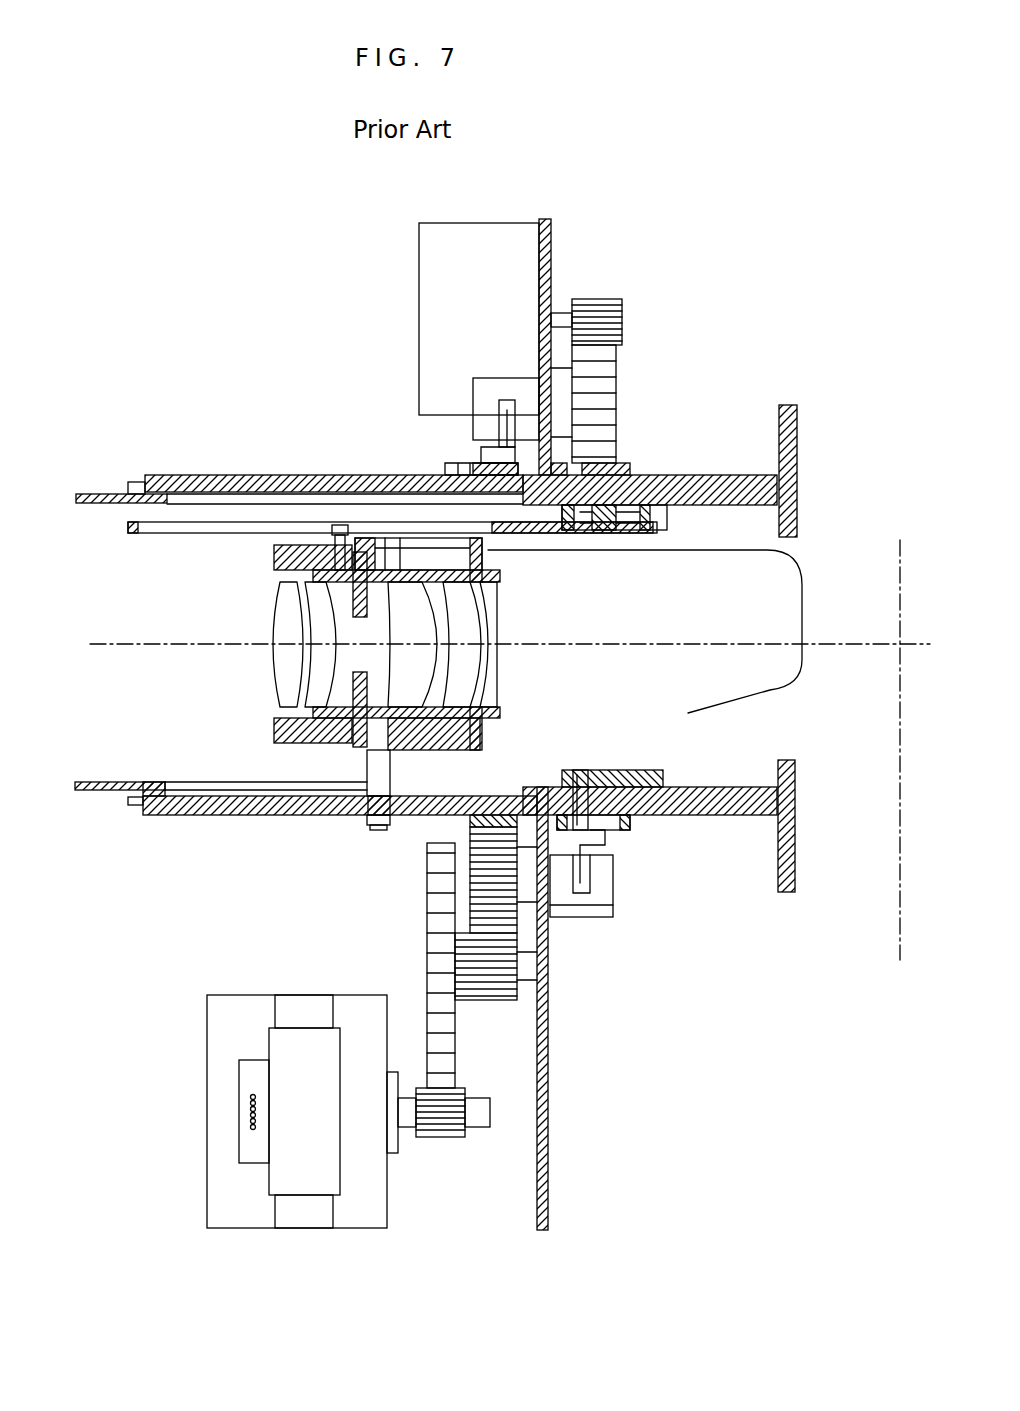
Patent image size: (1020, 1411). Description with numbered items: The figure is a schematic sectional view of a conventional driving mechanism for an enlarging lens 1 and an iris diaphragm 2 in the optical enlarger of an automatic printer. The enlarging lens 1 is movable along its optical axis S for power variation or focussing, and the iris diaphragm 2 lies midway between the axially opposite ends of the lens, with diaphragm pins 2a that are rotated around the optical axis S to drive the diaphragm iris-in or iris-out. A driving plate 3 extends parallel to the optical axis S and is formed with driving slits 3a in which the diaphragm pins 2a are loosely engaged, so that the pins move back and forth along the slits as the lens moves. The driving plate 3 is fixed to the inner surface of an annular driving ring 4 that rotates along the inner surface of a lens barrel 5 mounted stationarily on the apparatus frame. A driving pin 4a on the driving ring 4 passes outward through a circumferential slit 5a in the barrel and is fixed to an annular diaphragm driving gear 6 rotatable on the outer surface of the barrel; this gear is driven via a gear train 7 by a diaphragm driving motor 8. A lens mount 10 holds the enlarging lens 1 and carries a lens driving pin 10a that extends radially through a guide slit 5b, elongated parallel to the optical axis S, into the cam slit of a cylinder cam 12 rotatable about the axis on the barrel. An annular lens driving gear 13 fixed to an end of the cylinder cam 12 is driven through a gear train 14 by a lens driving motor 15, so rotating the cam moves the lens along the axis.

The enlarging lens 1 is at (245, 665).
The iris diaphragm 2 is at (333, 727).
The diaphragm pins 2a is at (333, 537).
The driving plate 3 is at (127, 523).
The driving slits 3a is at (173, 528).
The driving ring 4 is at (667, 517).
The driving pin 4a is at (560, 780).
The lens barrel 5 is at (702, 803).
The slit 5a is at (647, 823).
The guide slit 5b is at (227, 791).
The diaphragm driving gear 6 is at (607, 824).
The gear train 7 is at (617, 380).
The diaphragm driving motor 8 is at (440, 293).
The lens mount 10 is at (450, 750).
The lens driving pin 10a is at (377, 768).
The cylinder cam 12 is at (168, 815).
The lens driving gear 13 is at (520, 800).
The gear train 14 is at (437, 922).
The lens driving motor 15 is at (303, 1163).
The optical axis S is at (132, 643).